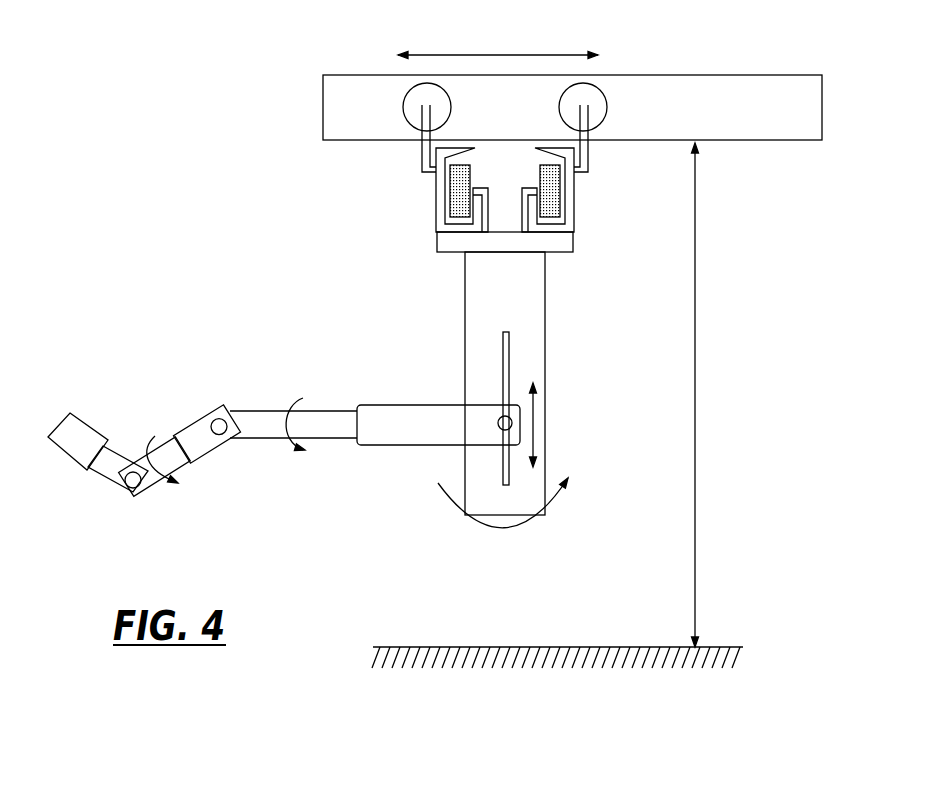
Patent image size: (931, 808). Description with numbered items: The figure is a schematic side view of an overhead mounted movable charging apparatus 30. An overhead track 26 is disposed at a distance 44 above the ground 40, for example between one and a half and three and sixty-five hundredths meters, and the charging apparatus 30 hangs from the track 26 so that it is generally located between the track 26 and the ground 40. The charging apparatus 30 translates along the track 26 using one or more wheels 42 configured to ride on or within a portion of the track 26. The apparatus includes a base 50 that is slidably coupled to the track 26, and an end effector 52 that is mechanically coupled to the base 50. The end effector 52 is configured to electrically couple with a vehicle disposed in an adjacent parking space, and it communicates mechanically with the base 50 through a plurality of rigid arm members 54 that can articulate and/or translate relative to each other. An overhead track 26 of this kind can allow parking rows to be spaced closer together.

The overhead track 26 is at (322, 106).
The wheels 42 is at (404, 100).
The movable charging apparatus 30 is at (582, 320).
The base 50 is at (464, 286).
The distance 44 is at (697, 384).
The ground 40 is at (733, 646).
The rigid arm members 54 is at (138, 452).
The end effector 52 is at (83, 410).